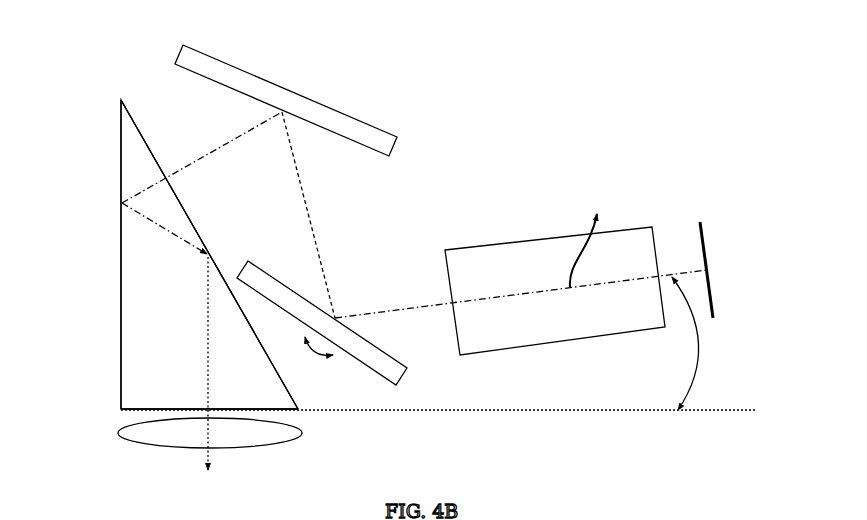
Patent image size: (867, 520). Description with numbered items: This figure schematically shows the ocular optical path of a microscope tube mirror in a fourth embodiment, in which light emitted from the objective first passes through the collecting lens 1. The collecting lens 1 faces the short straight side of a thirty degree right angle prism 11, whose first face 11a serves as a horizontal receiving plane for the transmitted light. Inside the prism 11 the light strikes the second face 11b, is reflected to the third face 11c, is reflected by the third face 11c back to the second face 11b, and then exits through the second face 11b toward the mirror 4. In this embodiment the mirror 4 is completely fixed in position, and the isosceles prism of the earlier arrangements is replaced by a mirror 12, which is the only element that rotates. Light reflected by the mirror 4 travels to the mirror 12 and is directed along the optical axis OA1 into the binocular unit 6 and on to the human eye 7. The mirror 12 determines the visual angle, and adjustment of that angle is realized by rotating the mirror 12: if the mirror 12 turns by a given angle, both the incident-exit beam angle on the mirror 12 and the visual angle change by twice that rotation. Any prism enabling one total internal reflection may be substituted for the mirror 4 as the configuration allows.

The collecting lens 1 is at (118, 432).
The mirror 4 is at (177, 60).
The binocular unit 6 is at (600, 340).
The human eye 7 is at (716, 308).
The 30 degree right angle prism 11 is at (121, 280).
The first face 11a is at (121, 409).
The second face 11b is at (272, 357).
The third face 11c is at (122, 203).
The mirror 12 is at (392, 387).
The optical axis OA1 is at (610, 245).